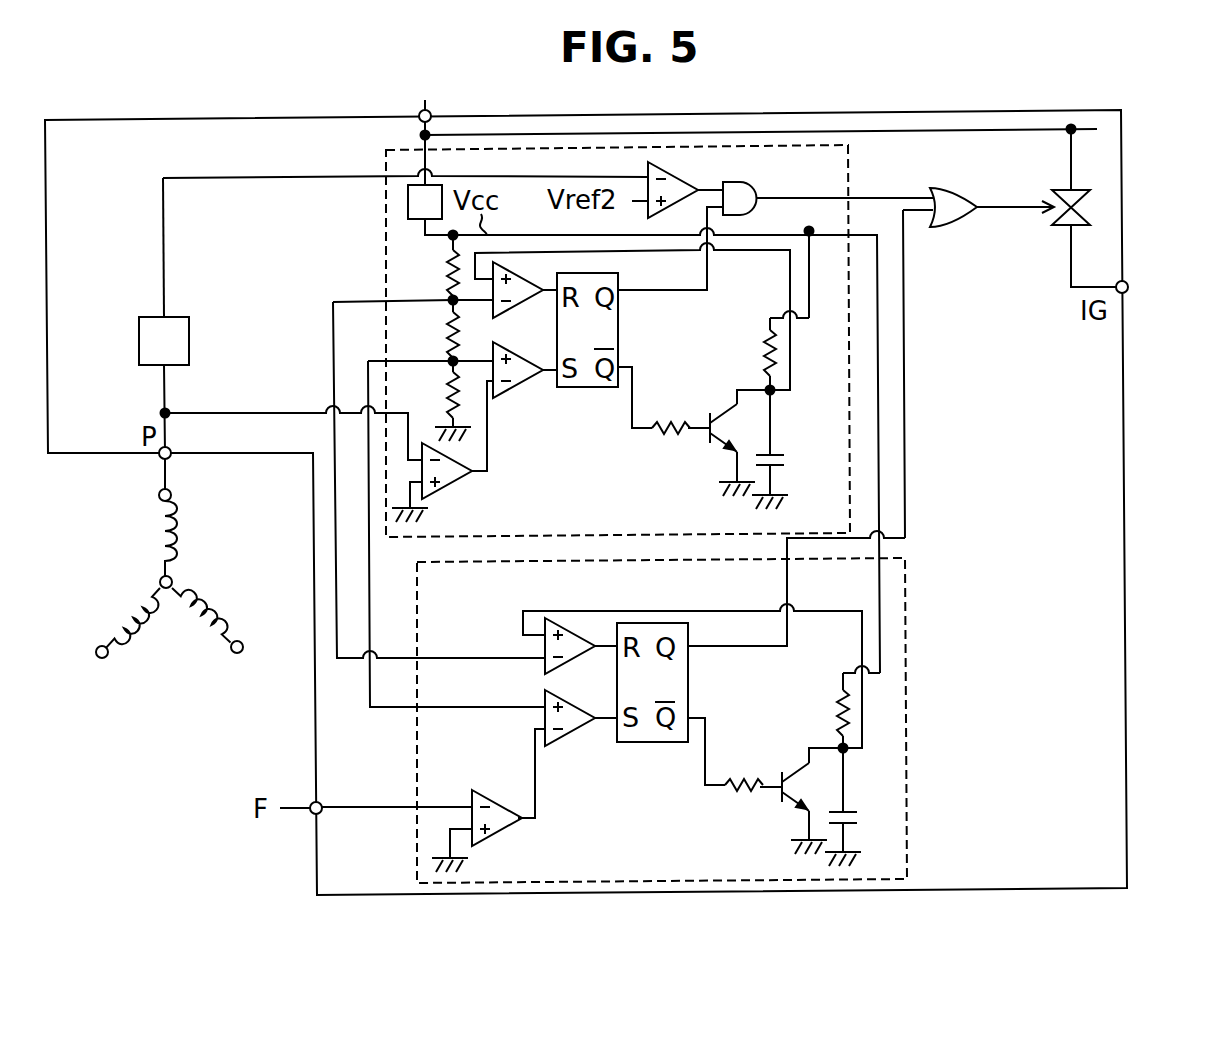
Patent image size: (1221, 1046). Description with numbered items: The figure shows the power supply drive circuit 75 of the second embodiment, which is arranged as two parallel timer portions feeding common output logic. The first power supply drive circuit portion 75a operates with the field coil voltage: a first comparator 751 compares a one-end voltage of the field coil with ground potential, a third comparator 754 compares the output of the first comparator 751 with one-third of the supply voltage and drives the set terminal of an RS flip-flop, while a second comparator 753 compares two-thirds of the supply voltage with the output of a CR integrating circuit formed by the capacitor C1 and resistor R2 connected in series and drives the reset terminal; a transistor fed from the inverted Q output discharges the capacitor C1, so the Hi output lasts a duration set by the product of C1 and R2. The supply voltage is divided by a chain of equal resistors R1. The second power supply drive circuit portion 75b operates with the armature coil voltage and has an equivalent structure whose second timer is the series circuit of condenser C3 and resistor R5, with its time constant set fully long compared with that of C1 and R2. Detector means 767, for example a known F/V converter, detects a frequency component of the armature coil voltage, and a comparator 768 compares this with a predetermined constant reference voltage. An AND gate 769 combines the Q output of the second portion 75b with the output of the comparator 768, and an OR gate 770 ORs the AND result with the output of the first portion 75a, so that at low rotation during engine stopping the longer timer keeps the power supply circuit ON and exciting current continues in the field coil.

The power supply drive circuit 75 is at (1125, 612).
The first power supply drive circuit portion 75a is at (905, 710).
The second power supply drive circuit portion 75b is at (850, 477).
The detector means 767 is at (186, 332).
The comparator 768 is at (673, 177).
The AND gate 769 is at (756, 187).
The OR gate 770 is at (954, 186).
The first comparator 751 is at (500, 831).
The second comparator 753 is at (568, 630).
The third comparator 754 is at (575, 735).
The resistor R1 is at (439, 338).
The resistor R2 is at (841, 718).
The resistor R5 is at (768, 362).
The capacitor C1 is at (856, 816).
The condenser C3 is at (783, 463).